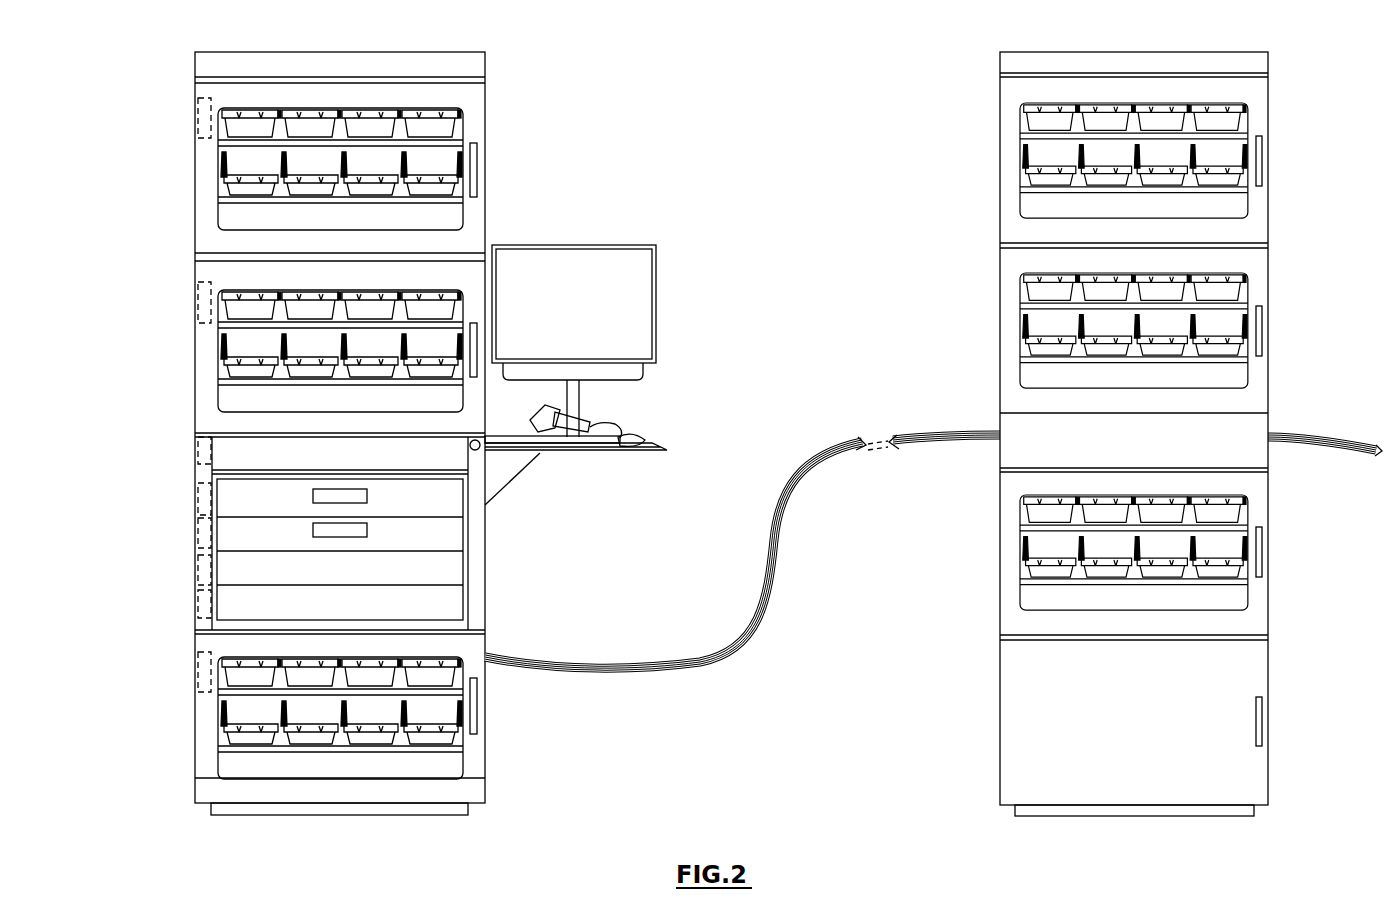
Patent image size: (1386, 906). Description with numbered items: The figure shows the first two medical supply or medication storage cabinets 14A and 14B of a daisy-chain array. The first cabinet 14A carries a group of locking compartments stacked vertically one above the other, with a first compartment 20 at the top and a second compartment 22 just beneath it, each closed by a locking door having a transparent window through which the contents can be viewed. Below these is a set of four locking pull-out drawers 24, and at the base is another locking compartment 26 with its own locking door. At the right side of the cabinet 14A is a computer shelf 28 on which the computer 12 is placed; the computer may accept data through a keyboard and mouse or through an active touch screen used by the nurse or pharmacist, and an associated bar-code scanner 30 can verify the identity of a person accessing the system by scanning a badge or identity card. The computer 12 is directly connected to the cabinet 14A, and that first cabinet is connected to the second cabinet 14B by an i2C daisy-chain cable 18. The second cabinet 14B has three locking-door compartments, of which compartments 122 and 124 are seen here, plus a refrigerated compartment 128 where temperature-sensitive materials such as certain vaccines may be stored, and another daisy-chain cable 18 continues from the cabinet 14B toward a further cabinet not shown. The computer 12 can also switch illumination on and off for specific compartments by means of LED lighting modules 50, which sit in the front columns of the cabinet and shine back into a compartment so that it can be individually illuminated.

The computer 12 is at (614, 245).
The first cabinet 14A is at (125, 58).
The second cabinet 14B is at (1284, 305).
The daisy-chain cable 18 is at (636, 670).
The first compartment 20 is at (485, 100).
The second compartment 22 is at (470, 275).
The locking pull-out drawers 24 is at (477, 527).
The locking compartment 26 is at (485, 752).
The computer shelf 28 is at (598, 451).
The bar-code scanner 30 is at (548, 412).
The LED lighting modules 50 is at (203, 112).
The locking-door compartment 122 is at (1263, 113).
The locking-door compartment 124 is at (1268, 397).
The refrigerated compartment 128 is at (1268, 754).